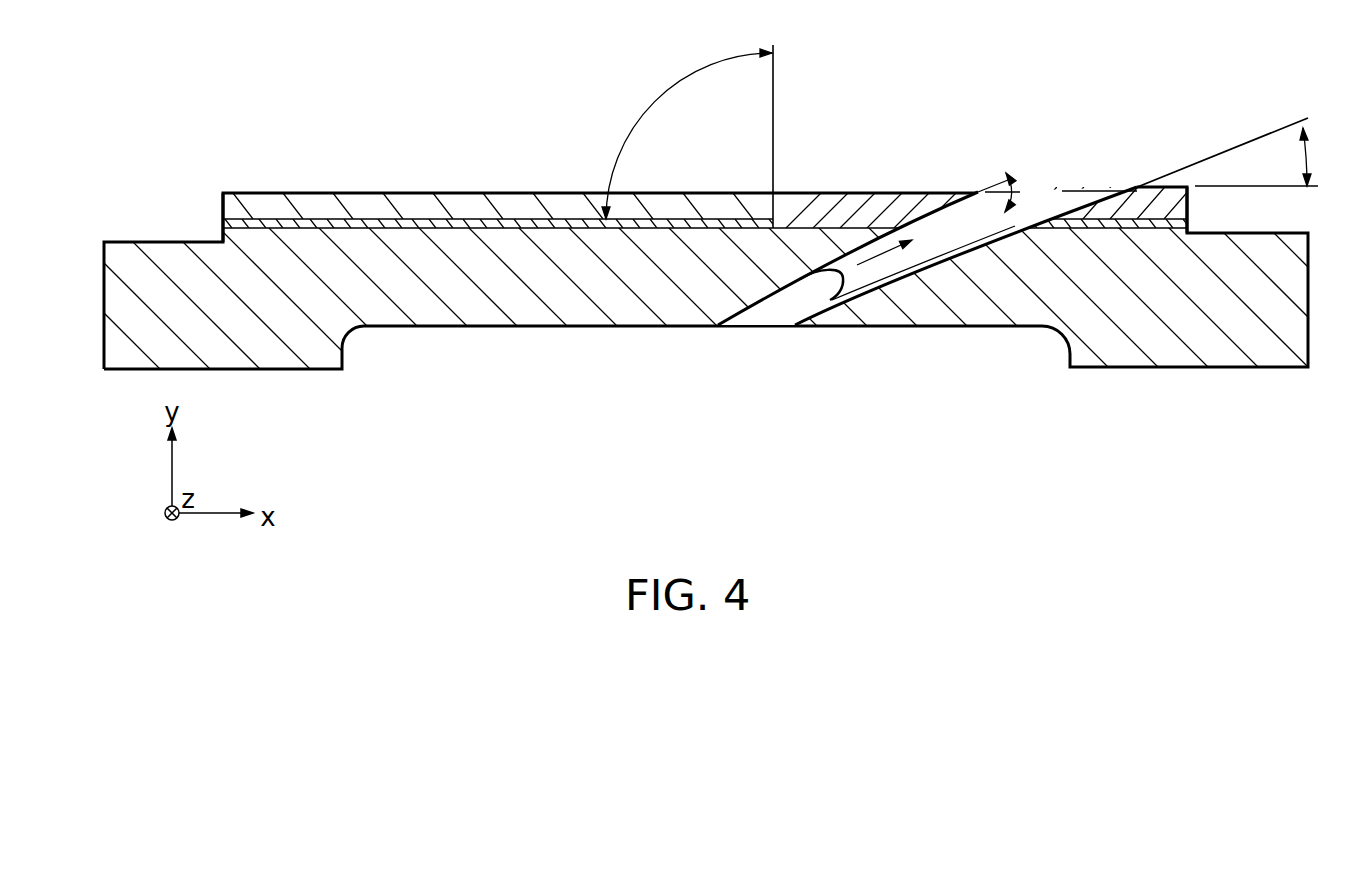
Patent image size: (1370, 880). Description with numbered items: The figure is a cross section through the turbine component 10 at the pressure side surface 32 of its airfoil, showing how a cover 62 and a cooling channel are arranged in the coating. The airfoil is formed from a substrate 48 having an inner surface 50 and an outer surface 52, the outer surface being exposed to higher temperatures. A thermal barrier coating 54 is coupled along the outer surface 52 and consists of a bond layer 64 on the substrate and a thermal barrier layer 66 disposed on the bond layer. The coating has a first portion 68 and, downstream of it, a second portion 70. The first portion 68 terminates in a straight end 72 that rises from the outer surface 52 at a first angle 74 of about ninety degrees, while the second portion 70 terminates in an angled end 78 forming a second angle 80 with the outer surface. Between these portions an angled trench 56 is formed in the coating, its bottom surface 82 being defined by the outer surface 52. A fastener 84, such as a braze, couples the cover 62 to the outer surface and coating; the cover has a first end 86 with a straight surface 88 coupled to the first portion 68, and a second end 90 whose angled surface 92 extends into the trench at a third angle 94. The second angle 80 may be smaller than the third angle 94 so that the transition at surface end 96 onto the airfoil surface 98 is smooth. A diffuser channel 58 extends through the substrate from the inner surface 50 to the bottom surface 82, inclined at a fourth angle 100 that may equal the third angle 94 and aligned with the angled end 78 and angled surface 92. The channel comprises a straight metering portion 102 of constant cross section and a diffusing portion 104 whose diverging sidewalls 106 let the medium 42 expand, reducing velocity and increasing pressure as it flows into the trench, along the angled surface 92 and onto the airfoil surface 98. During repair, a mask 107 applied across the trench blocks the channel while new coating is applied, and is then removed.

The turbine component 10 is at (1216, 352).
The pressure side surface 32 is at (355, 193).
The medium 42 is at (884, 262).
The substrate 48 is at (407, 293).
The inner surface 50 is at (477, 333).
The outer surface 52 is at (442, 228).
The thermal barrier coating 54 is at (258, 228).
The angled trench 56 is at (1028, 204).
The diffuser channel 58 is at (810, 270).
The cover 62 is at (880, 207).
The bond layer 64 is at (305, 227).
The thermal barrier layer 66 is at (412, 205).
The first portion 68 is at (567, 205).
The second portion 70 is at (1121, 188).
The straight end 72 is at (773, 203).
The first angle 74 is at (658, 98).
The angled end 78 is at (1107, 187).
The second angle 80 is at (1313, 150).
The bottom surface 82 is at (1022, 207).
The fastener 84 is at (858, 232).
The first end 86 is at (788, 190).
The straight surface 88 is at (773, 193).
The second end 90 is at (930, 213).
The angled surface 92 is at (958, 197).
The third angle 94 is at (1004, 172).
The surface end 96 is at (1135, 178).
The airfoil surface 98 is at (1160, 186).
The fourth angle 100 is at (923, 270).
The metering portion 102 is at (748, 302).
The diffusing portion 104 is at (1008, 250).
The diverging sidewalls 106 is at (950, 260).
The mask 107 is at (1128, 343).